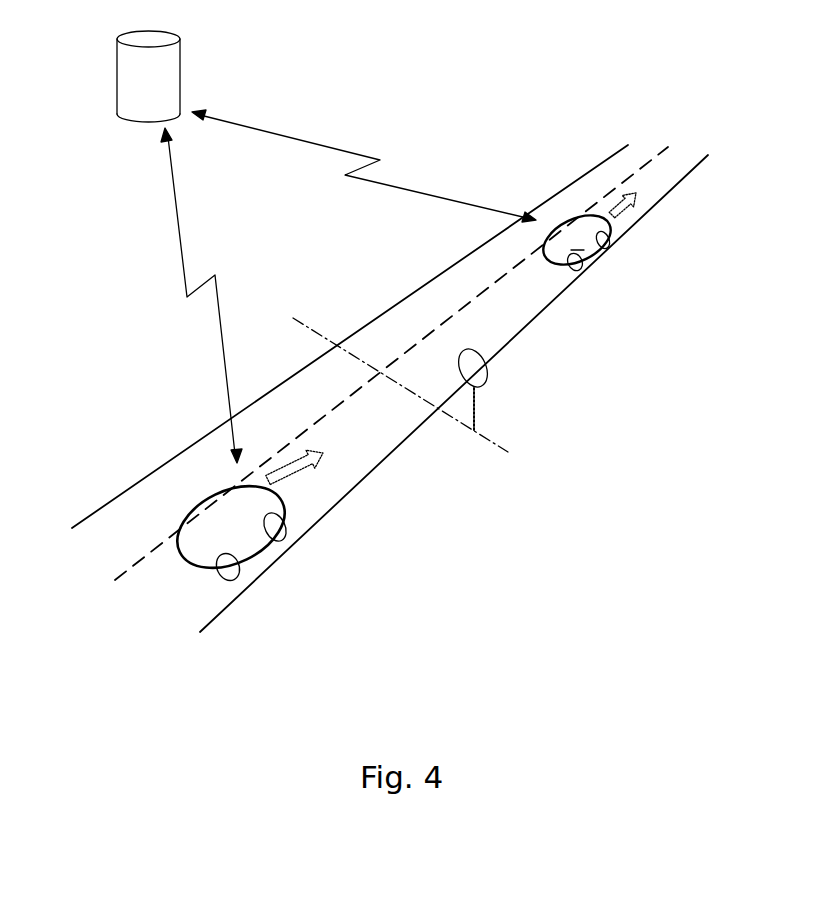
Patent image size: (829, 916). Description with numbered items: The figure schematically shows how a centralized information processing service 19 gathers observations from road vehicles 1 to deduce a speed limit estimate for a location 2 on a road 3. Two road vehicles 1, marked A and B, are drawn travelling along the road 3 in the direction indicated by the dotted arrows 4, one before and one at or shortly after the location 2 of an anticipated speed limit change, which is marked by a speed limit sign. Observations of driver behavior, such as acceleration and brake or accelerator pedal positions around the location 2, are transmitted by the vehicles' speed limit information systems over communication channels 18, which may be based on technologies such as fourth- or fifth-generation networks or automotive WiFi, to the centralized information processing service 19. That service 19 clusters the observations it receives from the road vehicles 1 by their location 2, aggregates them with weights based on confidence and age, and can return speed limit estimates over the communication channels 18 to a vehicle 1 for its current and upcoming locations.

The road vehicle 1 is at (242, 543).
The location 2 is at (473, 430).
The road 3 is at (368, 437).
The dotted arrows 4 is at (290, 483).
The communication channels 18 is at (180, 213).
The centralized information processing service 19 is at (162, 90).